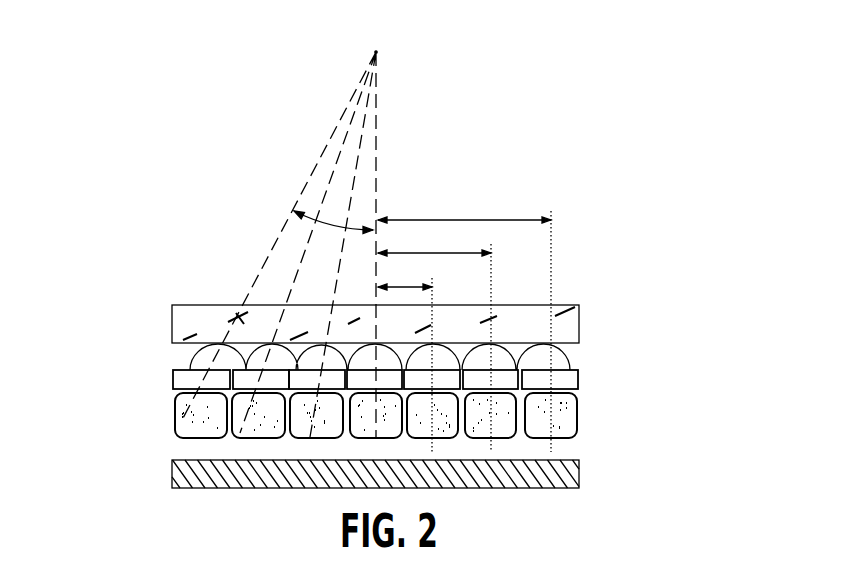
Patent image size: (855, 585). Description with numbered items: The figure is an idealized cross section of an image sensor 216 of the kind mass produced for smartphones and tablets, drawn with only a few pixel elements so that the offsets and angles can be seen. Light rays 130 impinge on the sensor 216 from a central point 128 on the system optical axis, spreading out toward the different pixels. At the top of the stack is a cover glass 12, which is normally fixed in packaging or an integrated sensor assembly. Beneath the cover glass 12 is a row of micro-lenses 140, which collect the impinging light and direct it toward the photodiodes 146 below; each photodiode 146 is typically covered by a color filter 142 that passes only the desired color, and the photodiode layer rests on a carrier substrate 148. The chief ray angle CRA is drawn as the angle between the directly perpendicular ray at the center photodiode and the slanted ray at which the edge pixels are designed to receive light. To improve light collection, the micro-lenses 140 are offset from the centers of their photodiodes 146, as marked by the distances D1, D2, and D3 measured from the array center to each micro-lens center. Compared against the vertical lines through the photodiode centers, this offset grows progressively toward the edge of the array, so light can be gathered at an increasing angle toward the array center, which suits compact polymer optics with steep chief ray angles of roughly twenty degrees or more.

The image sensor 216 is at (122, 327).
The cover glass 12 is at (173, 305).
The central point 128 is at (362, 46).
The light rays 130 is at (327, 136).
The micro-lenses 140 is at (196, 355).
The color filter 142 is at (173, 381).
The photodiodes 146 is at (175, 415).
The carrier substrate 148 is at (172, 477).
The chief ray angle CRA is at (298, 222).
The micro-lens offset distance D1 is at (424, 286).
The micro-lens offset distance D2 is at (445, 251).
The micro-lens offset distance D3 is at (466, 218).